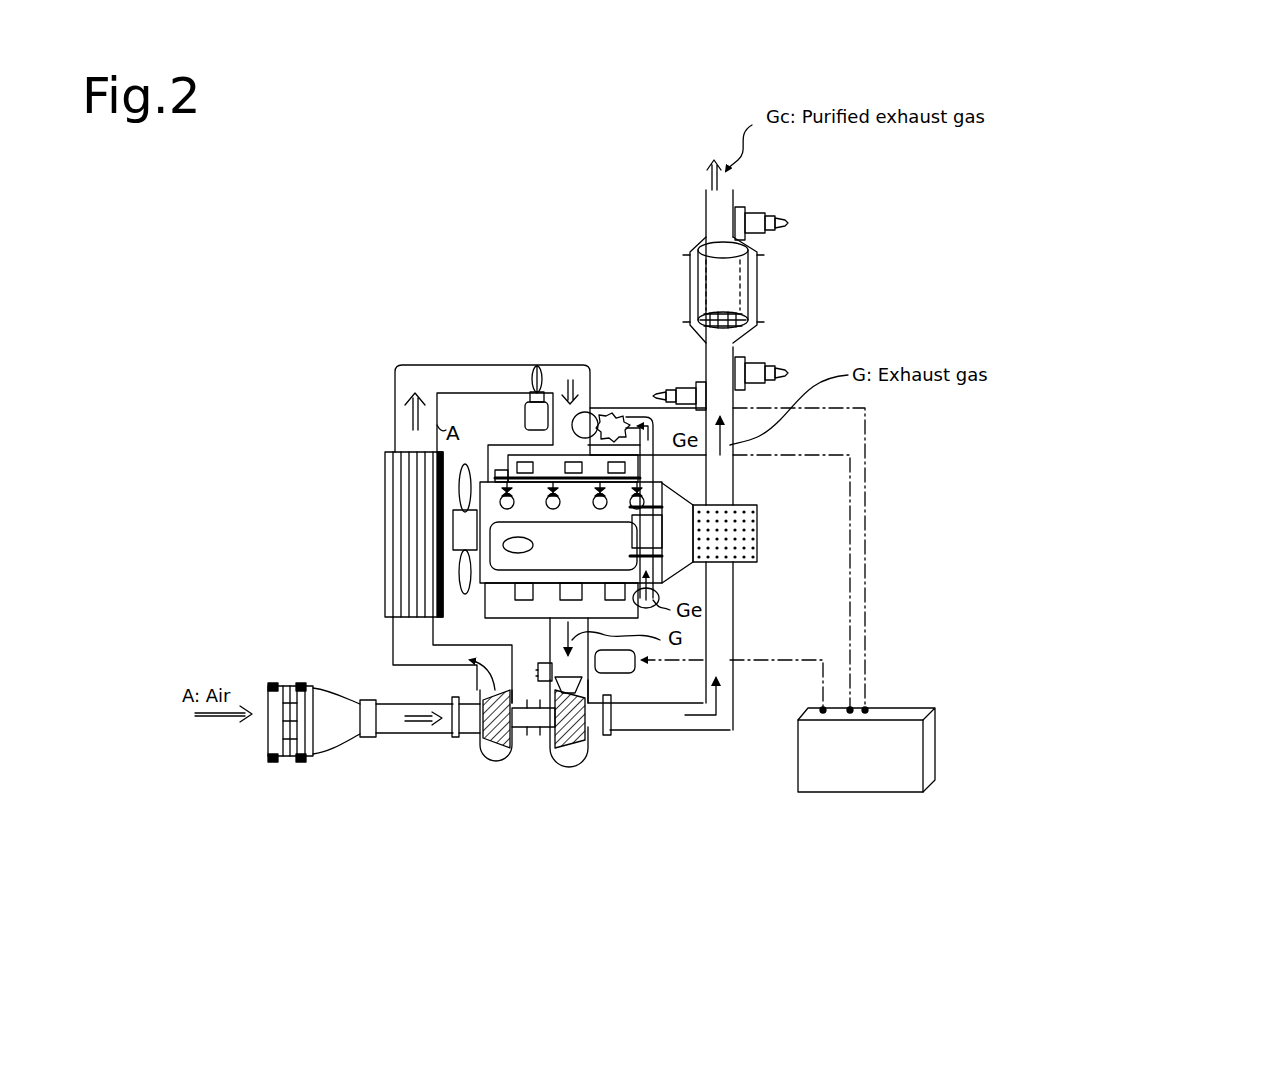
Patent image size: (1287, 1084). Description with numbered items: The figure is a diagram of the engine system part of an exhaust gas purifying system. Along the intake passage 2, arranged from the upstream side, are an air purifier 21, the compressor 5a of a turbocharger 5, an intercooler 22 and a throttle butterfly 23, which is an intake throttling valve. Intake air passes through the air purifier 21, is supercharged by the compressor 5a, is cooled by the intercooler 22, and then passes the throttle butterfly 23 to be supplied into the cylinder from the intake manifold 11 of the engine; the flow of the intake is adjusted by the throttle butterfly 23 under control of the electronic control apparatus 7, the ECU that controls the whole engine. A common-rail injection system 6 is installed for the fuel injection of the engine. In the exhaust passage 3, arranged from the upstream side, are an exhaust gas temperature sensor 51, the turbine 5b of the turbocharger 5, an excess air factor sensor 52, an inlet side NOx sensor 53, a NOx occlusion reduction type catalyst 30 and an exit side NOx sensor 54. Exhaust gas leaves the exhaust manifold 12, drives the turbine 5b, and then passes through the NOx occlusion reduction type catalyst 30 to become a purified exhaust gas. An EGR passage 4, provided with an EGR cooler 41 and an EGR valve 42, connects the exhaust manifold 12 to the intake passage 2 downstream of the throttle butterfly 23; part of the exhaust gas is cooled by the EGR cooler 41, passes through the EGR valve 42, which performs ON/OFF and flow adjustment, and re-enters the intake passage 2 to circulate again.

The intake passage 2 is at (397, 740).
The exhaust passage 3 is at (557, 365).
The EGR passage 4 is at (655, 535).
The turbocharger 5 is at (593, 773).
The compressor 5a is at (483, 755).
The turbine 5b is at (565, 755).
The common-rail injection system 6 is at (500, 470).
The electronic control apparatus 7 is at (887, 735).
The intake manifold 11 is at (525, 408).
The exhaust manifold 12 is at (402, 680).
The air purifier 21 is at (340, 740).
The intercooler 22 is at (402, 562).
The throttle butterfly 23 is at (535, 365).
The NOx occlusion reduction type catalyst 30 is at (740, 298).
The EGR cooler 41 is at (722, 538).
The EGR valve 42 is at (606, 410).
The exhaust gas temperature sensor 51 is at (622, 678).
The excess air factor sensor 52 is at (660, 392).
The inlet side NOx sensor 53 is at (778, 372).
The exit side NOx sensor 54 is at (777, 222).